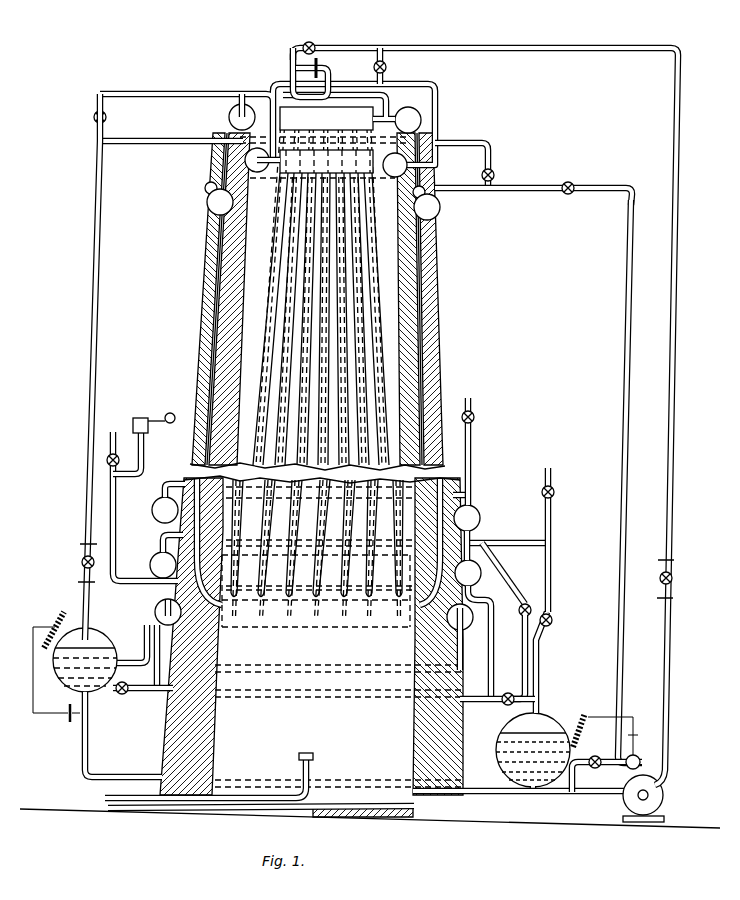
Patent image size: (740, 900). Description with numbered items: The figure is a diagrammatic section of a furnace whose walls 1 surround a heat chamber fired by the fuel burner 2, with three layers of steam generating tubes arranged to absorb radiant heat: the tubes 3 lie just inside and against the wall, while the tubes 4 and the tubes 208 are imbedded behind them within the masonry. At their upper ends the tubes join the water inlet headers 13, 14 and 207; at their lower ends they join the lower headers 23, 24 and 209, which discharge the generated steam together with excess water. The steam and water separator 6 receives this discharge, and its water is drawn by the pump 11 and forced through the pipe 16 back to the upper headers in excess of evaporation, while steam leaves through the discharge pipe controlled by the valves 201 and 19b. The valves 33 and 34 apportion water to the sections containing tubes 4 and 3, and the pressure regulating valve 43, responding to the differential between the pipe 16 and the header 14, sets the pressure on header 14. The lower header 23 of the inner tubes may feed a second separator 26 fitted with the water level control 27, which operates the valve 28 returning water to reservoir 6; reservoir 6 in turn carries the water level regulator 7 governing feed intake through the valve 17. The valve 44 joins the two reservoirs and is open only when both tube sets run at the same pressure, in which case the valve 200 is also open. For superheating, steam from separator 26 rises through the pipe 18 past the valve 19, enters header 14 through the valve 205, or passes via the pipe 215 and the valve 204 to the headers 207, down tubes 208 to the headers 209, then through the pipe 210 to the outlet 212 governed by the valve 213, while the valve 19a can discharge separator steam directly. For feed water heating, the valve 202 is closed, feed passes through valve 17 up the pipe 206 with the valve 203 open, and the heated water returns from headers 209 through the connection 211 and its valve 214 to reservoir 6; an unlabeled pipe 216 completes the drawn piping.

The furnace walls 1 is at (435, 262).
The fuel burner 2 is at (315, 757).
The tubes 3 is at (262, 293).
The tubes 4 is at (312, 262).
The steam and water separator 6 is at (497, 752).
The water level regulator 7 is at (586, 722).
The pump 11 is at (632, 804).
The water inlet header 13 is at (280, 163).
The water inlet header 14 is at (283, 120).
The pipe 16 is at (556, 50).
The valve 17 is at (625, 742).
The pipe 18 is at (92, 430).
The valve 19 is at (82, 560).
The valve 19a is at (115, 432).
The valve 19b is at (556, 492).
The lower header 23 is at (157, 612).
The lower header 24 is at (152, 568).
The steam and water separator 26 is at (62, 680).
The water level control 27 is at (55, 636).
The valve 28 is at (68, 725).
The valve 33 is at (309, 41).
The valve 34 is at (388, 67).
The pressure regulating valve 43 is at (290, 66).
The valve 44 is at (124, 696).
The valve 200 is at (509, 693).
The valve 201 is at (553, 614).
The valve 202 is at (598, 754).
The valve 203 is at (575, 187).
The valve 204 is at (495, 175).
The valve 205 is at (93, 117).
The pipe 206 is at (618, 456).
The water inlet header 207 is at (207, 202).
The tubes 208 is at (211, 336).
The lower header 209 is at (165, 512).
The pipe 210 is at (170, 484).
The connection 211 is at (503, 575).
The outlet 212 is at (473, 452).
The valve 213 is at (476, 417).
The valve 214 is at (513, 657).
The pipe 215 is at (478, 143).
The pipe 216 is at (533, 182).